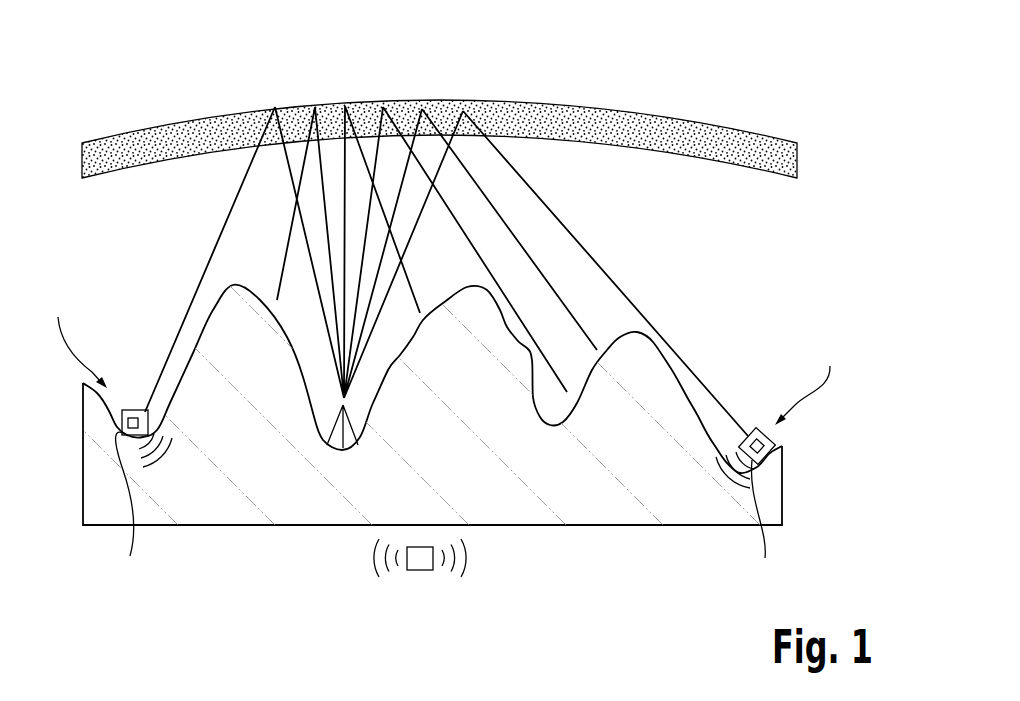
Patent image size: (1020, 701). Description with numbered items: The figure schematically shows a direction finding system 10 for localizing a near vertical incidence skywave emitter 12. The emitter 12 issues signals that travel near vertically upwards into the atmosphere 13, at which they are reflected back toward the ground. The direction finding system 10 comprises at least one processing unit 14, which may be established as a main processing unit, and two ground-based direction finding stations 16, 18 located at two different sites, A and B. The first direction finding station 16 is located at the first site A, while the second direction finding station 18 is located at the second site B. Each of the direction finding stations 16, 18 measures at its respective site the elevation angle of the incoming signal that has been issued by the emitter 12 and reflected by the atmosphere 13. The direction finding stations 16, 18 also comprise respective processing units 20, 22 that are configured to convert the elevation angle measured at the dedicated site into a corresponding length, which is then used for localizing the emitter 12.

The direction finding system 10 is at (766, 102).
The near vertical incidence skywave emitter 12 is at (333, 448).
The atmosphere 13 is at (605, 108).
The processing unit 14 is at (418, 571).
The first direction finding station 16 is at (128, 410).
The second direction finding station 18 is at (765, 430).
The processing unit 20 is at (128, 512).
The processing unit 22 is at (757, 526).